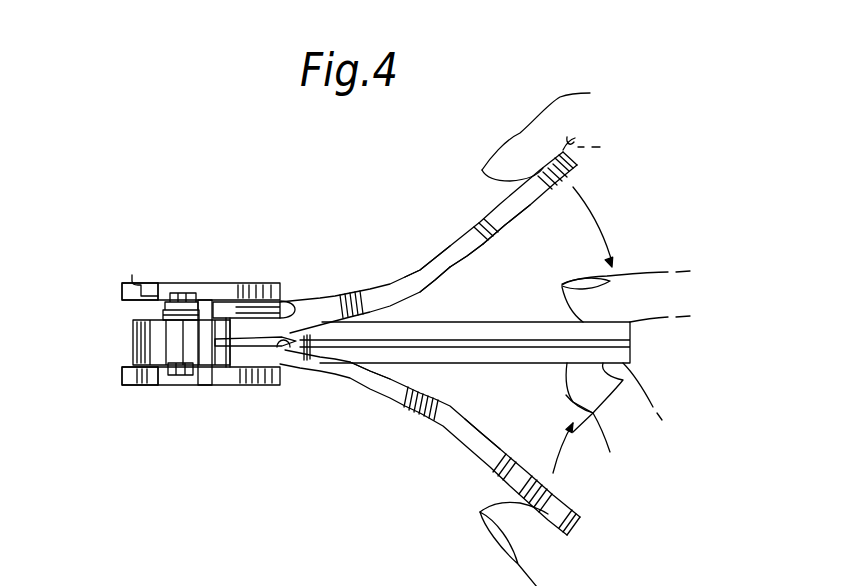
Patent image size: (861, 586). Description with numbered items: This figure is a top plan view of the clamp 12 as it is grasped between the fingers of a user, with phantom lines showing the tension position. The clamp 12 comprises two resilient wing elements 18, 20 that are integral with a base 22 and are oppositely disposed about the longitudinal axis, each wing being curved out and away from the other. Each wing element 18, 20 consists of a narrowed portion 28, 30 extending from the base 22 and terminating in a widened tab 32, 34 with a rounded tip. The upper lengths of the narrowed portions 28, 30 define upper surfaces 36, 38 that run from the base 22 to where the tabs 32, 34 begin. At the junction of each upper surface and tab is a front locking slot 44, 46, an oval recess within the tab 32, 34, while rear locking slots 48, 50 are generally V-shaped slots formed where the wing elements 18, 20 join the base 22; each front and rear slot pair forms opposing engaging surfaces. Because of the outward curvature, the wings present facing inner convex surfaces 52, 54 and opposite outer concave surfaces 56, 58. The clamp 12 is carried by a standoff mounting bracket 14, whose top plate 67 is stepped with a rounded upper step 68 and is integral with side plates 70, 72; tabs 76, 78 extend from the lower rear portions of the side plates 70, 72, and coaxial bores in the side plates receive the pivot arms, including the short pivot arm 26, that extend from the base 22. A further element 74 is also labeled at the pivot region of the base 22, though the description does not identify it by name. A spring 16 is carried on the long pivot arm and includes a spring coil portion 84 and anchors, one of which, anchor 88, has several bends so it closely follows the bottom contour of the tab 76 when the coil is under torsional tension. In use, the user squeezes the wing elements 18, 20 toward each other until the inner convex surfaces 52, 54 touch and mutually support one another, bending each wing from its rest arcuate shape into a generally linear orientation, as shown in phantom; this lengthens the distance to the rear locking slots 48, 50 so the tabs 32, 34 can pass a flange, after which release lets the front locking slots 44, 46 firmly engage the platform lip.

The clamp 12 is at (425, 237).
The standoff mounting bracket 14 is at (127, 390).
The spring 16 is at (147, 310).
The wing element 18 is at (363, 285).
The wing element 20 is at (395, 420).
The base 22 is at (128, 341).
The short pivot arm 26 is at (182, 376).
The narrowed portion 28 is at (480, 246).
The narrowed portion 30 is at (475, 443).
The tab 32 is at (527, 202).
The tab 34 is at (485, 508).
The upper surface 36 is at (423, 273).
The upper surface 38 is at (370, 382).
The front locking slot 44 is at (513, 219).
The front locking slot 46 is at (510, 485).
The rear locking slot 48 is at (233, 330).
The rear locking slot 50 is at (230, 352).
The inner convex surface 52 is at (460, 267).
The inner convex surface 54 is at (477, 424).
The outer concave surface 56 is at (417, 271).
The outer concave surface 58 is at (440, 430).
The top plate 67 is at (285, 292).
The upper step 68 is at (292, 300).
The side plate 70 is at (203, 285).
The side plate 72 is at (213, 387).
The pin 74 is at (282, 348).
The tab 76 is at (125, 290).
The tab 78 is at (122, 373).
The spring coil portion 84 is at (178, 293).
The anchor 88 is at (137, 282).